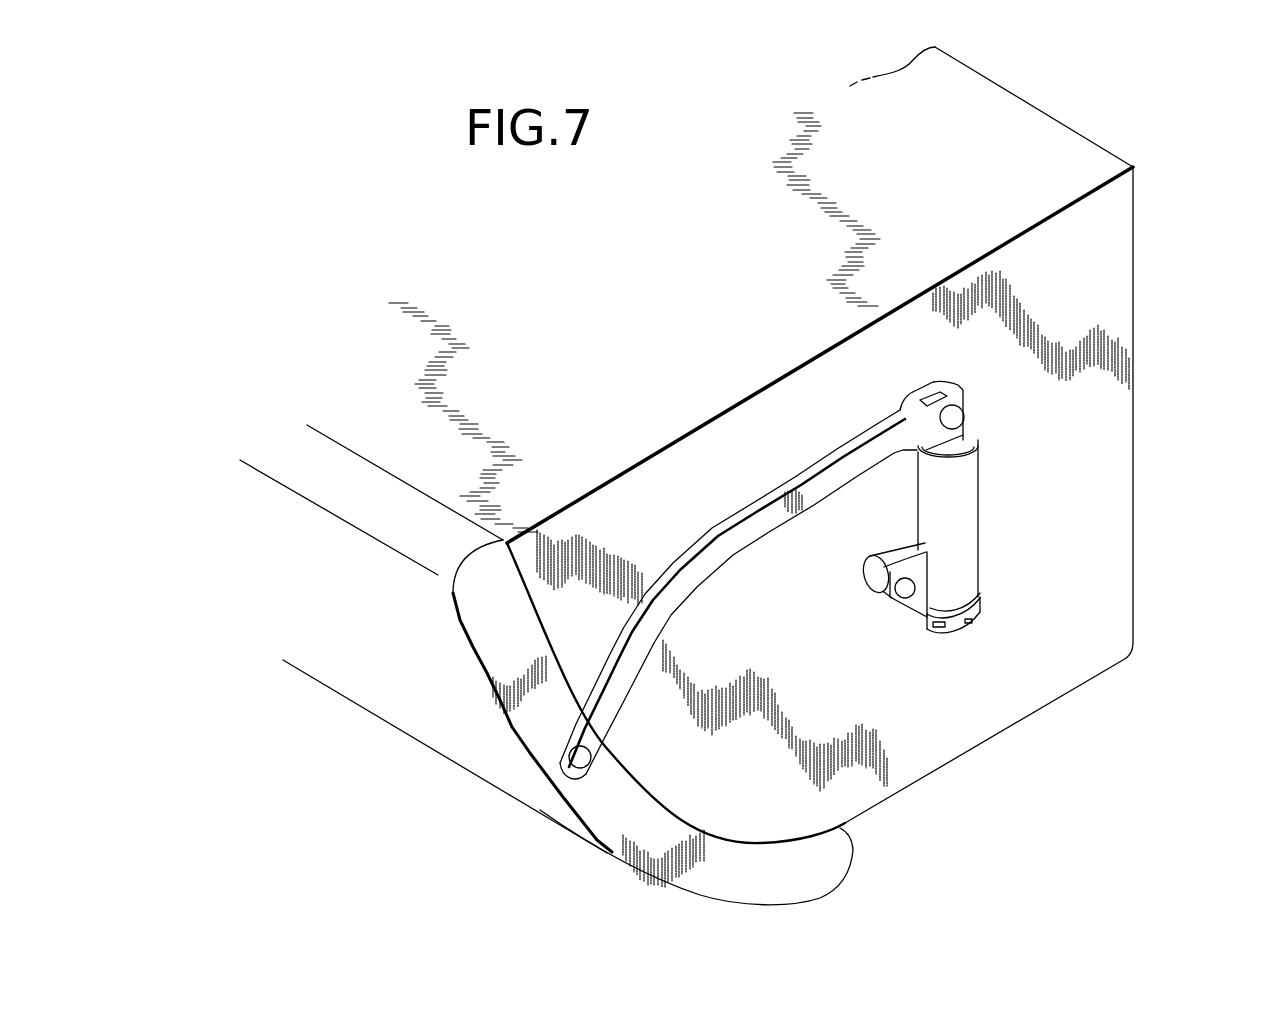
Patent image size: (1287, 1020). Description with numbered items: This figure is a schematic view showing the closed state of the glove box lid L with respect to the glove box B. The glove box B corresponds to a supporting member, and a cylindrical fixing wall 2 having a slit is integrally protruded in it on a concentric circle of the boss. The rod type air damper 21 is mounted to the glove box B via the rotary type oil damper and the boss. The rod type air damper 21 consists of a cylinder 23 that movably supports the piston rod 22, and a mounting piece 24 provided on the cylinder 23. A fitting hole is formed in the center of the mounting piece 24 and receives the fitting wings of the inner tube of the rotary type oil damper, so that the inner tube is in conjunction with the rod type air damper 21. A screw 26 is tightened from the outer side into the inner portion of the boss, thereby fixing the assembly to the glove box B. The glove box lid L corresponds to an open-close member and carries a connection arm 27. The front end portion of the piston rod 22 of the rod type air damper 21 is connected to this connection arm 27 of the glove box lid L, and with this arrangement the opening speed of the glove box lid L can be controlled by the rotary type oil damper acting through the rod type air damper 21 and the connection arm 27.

The glove box B is at (1113, 242).
The glove box lid L is at (392, 690).
The cylindrical fixing wall 2 is at (868, 571).
The rod type air damper 21 is at (940, 453).
The piston rod 22 is at (947, 382).
The cylinder 23 is at (965, 567).
The mounting piece 24 is at (910, 606).
The screw 26 is at (903, 590).
The connection arm 27 is at (695, 565).